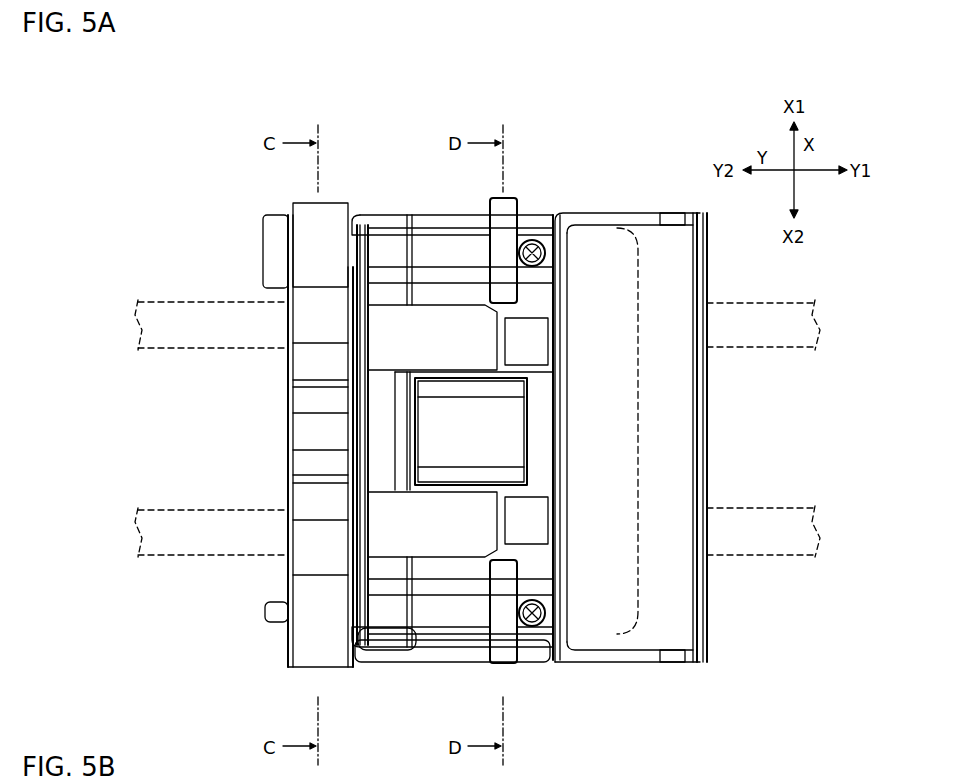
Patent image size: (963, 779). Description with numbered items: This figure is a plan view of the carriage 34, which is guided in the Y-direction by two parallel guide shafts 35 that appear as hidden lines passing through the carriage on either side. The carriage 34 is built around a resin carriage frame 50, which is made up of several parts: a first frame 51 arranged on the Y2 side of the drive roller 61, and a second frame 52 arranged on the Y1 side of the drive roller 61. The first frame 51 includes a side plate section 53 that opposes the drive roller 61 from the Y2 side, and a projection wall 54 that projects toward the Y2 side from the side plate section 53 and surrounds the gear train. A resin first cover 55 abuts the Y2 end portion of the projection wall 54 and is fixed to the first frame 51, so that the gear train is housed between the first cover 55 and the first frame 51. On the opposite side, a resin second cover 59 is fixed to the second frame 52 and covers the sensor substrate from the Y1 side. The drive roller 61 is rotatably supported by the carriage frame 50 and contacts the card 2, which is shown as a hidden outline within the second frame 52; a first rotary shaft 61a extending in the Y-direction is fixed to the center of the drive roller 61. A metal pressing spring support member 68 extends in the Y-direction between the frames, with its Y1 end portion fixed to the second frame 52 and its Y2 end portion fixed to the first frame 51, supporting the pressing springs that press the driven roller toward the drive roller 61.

The card 2 is at (640, 475).
The carriage 34 is at (264, 433).
The guide shafts 35 is at (790, 352).
The carriage frame 50 is at (725, 750).
The first frame 51 is at (338, 664).
The second frame 52 is at (636, 663).
The side plate section 53 is at (343, 503).
The projection wall 54 is at (310, 207).
The first cover 55 is at (278, 656).
The second cover 59 is at (712, 665).
The drive roller 61 is at (508, 215).
The first rotary shaft 61a is at (433, 250).
The pressing spring support member 68 is at (460, 283).